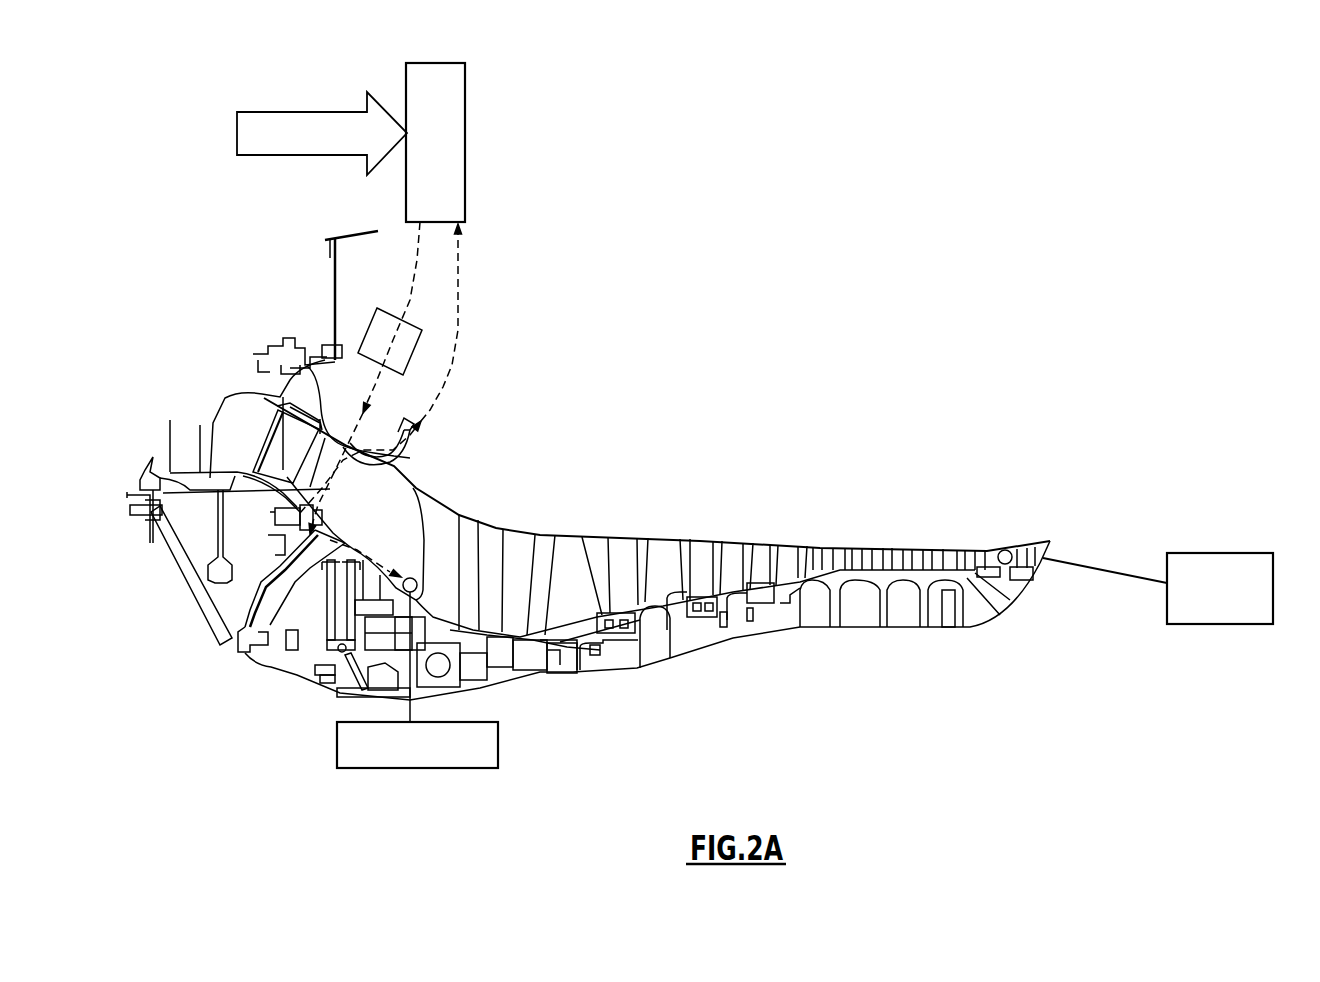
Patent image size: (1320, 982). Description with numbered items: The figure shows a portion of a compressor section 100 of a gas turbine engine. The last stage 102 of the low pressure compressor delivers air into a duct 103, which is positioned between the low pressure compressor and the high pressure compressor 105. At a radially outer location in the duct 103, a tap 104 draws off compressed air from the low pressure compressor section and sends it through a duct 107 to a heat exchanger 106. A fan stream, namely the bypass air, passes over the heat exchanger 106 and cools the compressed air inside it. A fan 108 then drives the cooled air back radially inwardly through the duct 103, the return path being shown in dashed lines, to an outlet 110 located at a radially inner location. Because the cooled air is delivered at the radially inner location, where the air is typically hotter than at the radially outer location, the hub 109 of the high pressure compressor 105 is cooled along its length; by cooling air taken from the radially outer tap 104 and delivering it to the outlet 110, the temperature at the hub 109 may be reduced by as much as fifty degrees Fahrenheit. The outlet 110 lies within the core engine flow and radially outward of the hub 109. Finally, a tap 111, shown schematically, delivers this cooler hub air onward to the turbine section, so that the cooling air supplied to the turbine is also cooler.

The compressor section 100 is at (576, 418).
The last stage of low pressure compressor 102 is at (220, 450).
The duct 103 is at (382, 503).
The tap 104 is at (430, 440).
The high pressure compressor 105 is at (570, 567).
The heat exchanger 106 is at (449, 160).
The duct 107 is at (457, 307).
The fan 108 is at (383, 320).
The hub 109 is at (667, 620).
The outlet 110 is at (396, 575).
The tap 111 is at (1245, 603).